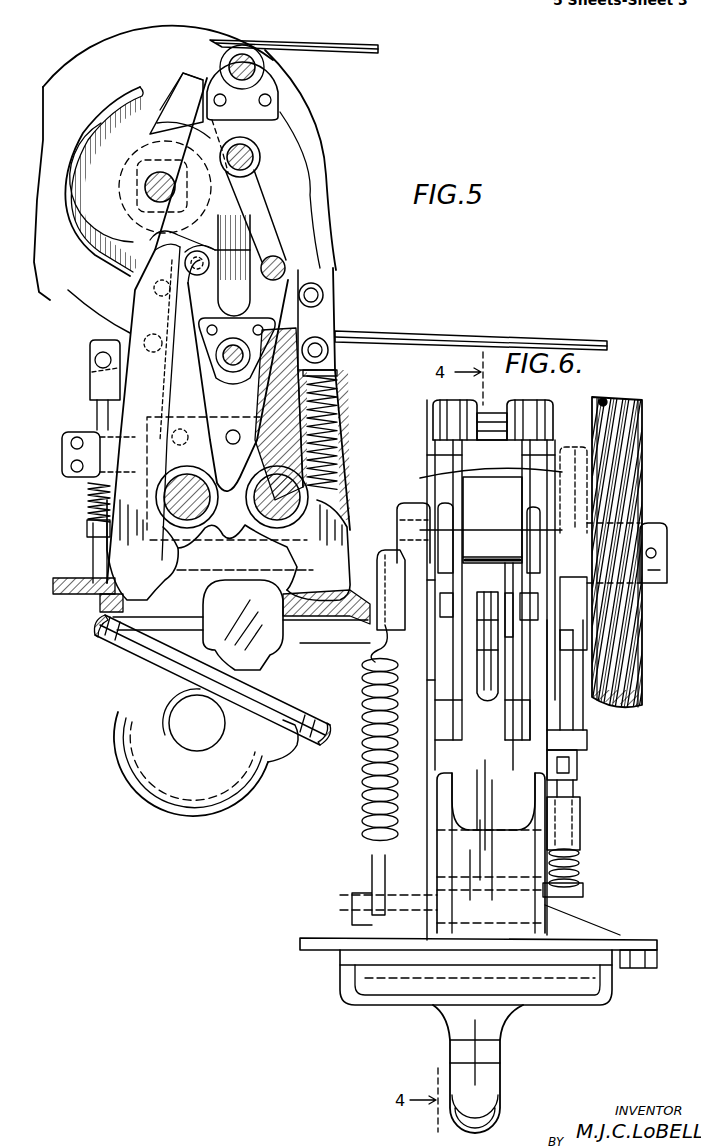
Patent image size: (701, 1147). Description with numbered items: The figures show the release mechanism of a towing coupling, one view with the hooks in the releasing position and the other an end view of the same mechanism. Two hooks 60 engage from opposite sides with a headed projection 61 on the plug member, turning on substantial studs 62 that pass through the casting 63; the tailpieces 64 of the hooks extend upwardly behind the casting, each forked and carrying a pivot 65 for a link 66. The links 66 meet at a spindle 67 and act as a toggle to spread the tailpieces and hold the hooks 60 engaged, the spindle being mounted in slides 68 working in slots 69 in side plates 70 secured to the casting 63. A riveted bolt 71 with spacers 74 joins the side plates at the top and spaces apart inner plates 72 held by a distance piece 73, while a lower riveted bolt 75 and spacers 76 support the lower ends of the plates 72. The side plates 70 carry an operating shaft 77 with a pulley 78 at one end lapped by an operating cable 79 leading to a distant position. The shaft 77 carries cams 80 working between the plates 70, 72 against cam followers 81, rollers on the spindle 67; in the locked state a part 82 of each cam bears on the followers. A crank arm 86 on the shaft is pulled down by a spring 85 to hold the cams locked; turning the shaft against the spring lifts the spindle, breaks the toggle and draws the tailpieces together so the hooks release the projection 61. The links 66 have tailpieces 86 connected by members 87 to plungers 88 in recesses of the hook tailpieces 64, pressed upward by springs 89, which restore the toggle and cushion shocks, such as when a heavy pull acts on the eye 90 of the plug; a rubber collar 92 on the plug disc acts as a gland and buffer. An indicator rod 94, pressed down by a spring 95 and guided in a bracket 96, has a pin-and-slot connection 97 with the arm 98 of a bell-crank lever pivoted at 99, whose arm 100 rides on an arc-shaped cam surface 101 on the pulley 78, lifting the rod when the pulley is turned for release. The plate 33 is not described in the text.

In FIG. 5, the plate 33 is at (343, 626).
In FIG. 5, the hook 60 is at (337, 530).
In FIG. 6, the hook 60 is at (505, 918).
In FIG. 5, the headed projection 61 is at (233, 614).
In FIG. 5, the stud 62 is at (280, 497).
In FIG. 6, the stud 62 is at (415, 848).
In FIG. 5, the casting 63 is at (283, 405).
In FIG. 6, the casting 63 is at (613, 950).
In FIG. 5, the tailpiece 64 is at (310, 373).
In FIG. 5, the pivot 65 is at (280, 263).
In FIG. 5, the link 66 is at (268, 205).
In FIG. 5, the spindle 67 is at (258, 157).
In FIG. 5, the slide 68 is at (252, 140).
In FIG. 5, the slot 69 is at (324, 296).
In FIG. 5, the side plate 70 is at (130, 222).
In FIG. 6, the side plate 70 is at (547, 430).
In FIG. 5, the riveted bolt 71 is at (244, 60).
In FIG. 6, the riveted bolt 71 is at (490, 420).
In FIG. 6, the inner plate 72 is at (475, 468).
In FIG. 5, the distance piece 73 is at (257, 120).
In FIG. 6, the distance piece 73 is at (510, 427).
In FIG. 6, the spacer 74 is at (452, 403).
In FIG. 5, the riveted bolt 75 is at (245, 355).
In FIG. 6, the riveted bolt 75 is at (430, 717).
In FIG. 6, the spacer 76 is at (440, 724).
In FIG. 5, the operating shaft 77 is at (158, 170).
In FIG. 6, the operating shaft 77 is at (507, 543).
In FIG. 5, the pulley 78 is at (95, 76).
In FIG. 6, the pulley 78 is at (640, 423).
In FIG. 5, the operating cable 79 is at (344, 44).
In FIG. 6, the operating cable 79 is at (605, 405).
In FIG. 5, the cam 80 is at (190, 87).
In FIG. 6, the cam 80 is at (443, 551).
In FIG. 6, the cam follower 81 is at (527, 540).
In FIG. 5, the locking surface 82 is at (215, 100).
In FIG. 6, the spring 85 is at (367, 762).
In FIG. 5, the crank arm 86 is at (286, 268).
In FIG. 6, the crank arm 86 is at (405, 525).
In FIG. 5, the member 87 is at (310, 320).
In FIG. 5, the plunger 88 is at (320, 362).
In FIG. 5, the spring 89 is at (338, 428).
In FIG. 5, the eye 90 is at (120, 758).
In FIG. 6, the eye 90 is at (463, 1033).
In FIG. 5, the collar 92 is at (100, 630).
In FIG. 6, the collar 92 is at (601, 1004).
In FIG. 5, the rod 94 is at (95, 567).
In FIG. 6, the rod 94 is at (577, 793).
In FIG. 5, the spring 95 is at (88, 512).
In FIG. 6, the spring 95 is at (578, 873).
In FIG. 5, the bracket 96 is at (66, 456).
In FIG. 6, the bracket 96 is at (581, 813).
In FIG. 5, the pin-and-slot connection 97 is at (90, 368).
In FIG. 6, the pin-and-slot connection 97 is at (577, 755).
In FIG. 5, the arm 98 is at (95, 354).
In FIG. 6, the pivot 99 is at (580, 733).
In FIG. 6, the arm 100 is at (567, 700).
In FIG. 5, the cam surface 101 is at (70, 120).